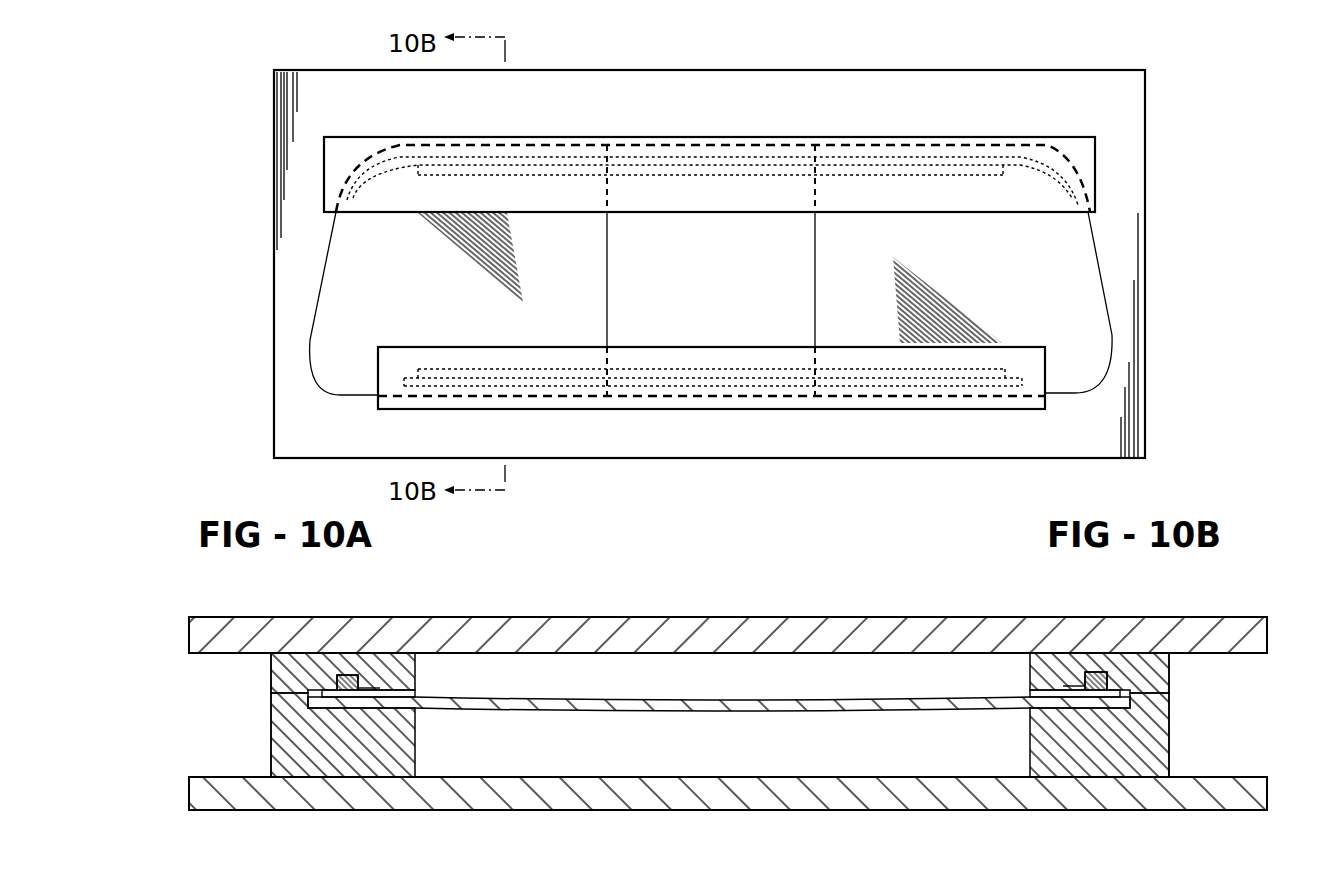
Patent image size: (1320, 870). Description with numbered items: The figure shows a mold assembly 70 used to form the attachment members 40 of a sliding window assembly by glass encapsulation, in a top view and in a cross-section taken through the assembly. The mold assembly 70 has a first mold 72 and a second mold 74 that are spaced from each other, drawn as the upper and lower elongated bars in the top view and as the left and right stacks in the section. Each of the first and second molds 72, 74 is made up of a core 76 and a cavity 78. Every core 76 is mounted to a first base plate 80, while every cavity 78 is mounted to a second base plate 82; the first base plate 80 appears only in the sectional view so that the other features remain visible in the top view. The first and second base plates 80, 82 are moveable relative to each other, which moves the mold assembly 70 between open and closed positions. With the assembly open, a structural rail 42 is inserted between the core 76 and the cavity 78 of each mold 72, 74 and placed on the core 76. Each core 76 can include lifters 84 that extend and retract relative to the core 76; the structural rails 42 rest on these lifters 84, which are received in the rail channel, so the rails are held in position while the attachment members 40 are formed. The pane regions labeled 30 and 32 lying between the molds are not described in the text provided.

In FIG. 10A, the membrane / flexible sheet 30 is at (402, 297).
In FIG. 10B, the membrane / flexible sheet 30 is at (602, 707).
In FIG. 10A, the membrane region / electrode portion 32 is at (1015, 297).
In FIG. 10A, the attachment member 40 is at (718, 157).
In FIG. 10B, the attachment member 40 is at (323, 690).
In FIG. 10B, the structural rail 42 is at (343, 676).
In FIG. 10A, the mold assembly 70 is at (1150, 58).
In FIG. 10A, the first mold 72 is at (634, 147).
In FIG. 10B, the first mold 72 is at (266, 697).
In FIG. 10A, the second mold 74 is at (665, 397).
In FIG. 10B, the second mold 74 is at (1180, 697).
In FIG. 10B, the core 76 is at (283, 666).
In FIG. 10B, the cavity 78 is at (291, 740).
In FIG. 10B, the first base plate 80 is at (573, 622).
In FIG. 10B, the second base plate 82 is at (428, 798).
In FIG. 10B, the lifter 84 is at (362, 688).